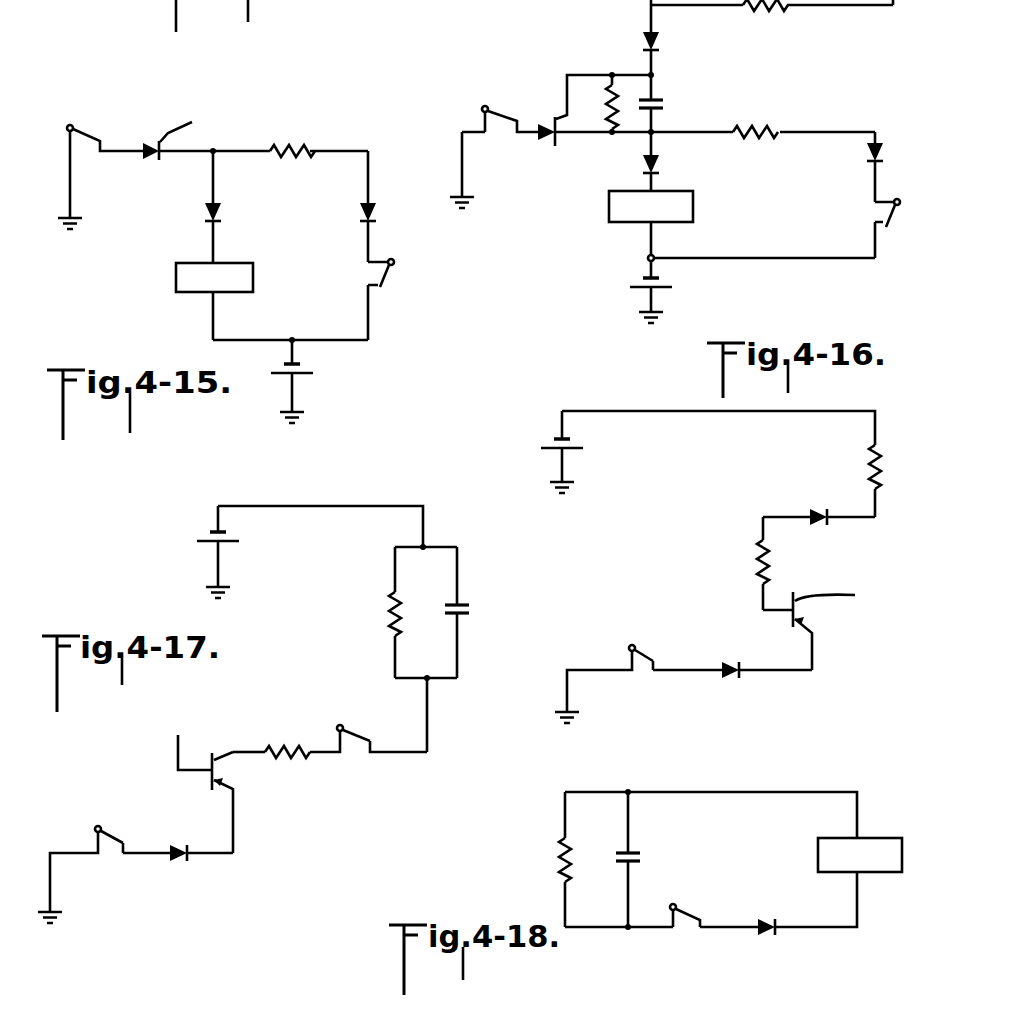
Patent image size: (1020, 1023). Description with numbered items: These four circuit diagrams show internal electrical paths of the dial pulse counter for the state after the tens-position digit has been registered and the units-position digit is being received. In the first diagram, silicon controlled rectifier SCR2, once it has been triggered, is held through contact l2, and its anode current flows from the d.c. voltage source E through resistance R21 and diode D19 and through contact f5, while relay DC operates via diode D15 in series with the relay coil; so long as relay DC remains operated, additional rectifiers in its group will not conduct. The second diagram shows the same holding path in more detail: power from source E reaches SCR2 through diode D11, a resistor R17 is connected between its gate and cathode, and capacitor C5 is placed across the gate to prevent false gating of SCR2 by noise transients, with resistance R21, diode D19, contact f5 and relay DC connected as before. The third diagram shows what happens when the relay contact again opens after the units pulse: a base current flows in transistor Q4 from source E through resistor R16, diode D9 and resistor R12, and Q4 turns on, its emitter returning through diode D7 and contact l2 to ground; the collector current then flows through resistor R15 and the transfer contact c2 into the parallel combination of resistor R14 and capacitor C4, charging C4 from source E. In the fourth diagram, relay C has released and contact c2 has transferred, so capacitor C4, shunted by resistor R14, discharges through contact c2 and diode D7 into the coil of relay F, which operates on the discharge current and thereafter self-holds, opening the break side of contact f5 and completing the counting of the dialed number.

In FIG. 4-15, the contact l2 is at (100, 165).
In FIG. 4-16, the contact l2 is at (494, 145).
In FIG. 4-17, the contact l2 is at (347, 773).
In FIG. 4-15, the silicon controlled rectifier SCR2 is at (157, 155).
In FIG. 4-16, the silicon controlled rectifier SCR2 is at (535, 146).
In FIG. 4-15, the resistance R21 is at (292, 139).
In FIG. 4-16, the resistance R21 is at (756, 120).
In FIG. 4-15, the diode D15 is at (234, 207).
In FIG. 4-16, the diode D15 is at (673, 161).
In FIG. 4-15, the relay DC is at (230, 301).
In FIG. 4-16, the relay DC is at (626, 223).
In FIG. 4-15, the diode D19 is at (387, 206).
In FIG. 4-16, the diode D19 is at (895, 167).
In FIG. 4-15, the contact f5 is at (391, 299).
In FIG. 4-16, the contact f5 is at (898, 228).
In FIG. 4-15, the d.c. voltage source E is at (298, 381).
In FIG. 4-16, the d.c. voltage source E is at (634, 292).
In FIG. 4-17, the d.c. voltage source E is at (397, 504).
In FIG. 4-16, the diode D11 is at (675, 53).
In FIG. 4-16, the resistor R17 is at (603, 103).
In FIG. 4-16, the capacitor C5 is at (666, 103).
In FIG. 4-17, the resistor R14 is at (367, 612).
In FIG. 4-18, the resistor R14 is at (542, 859).
In FIG. 4-17, the capacitor C4 is at (471, 612).
In FIG. 4-18, the capacitor C4 is at (642, 859).
In FIG. 4-17, the resistor R15 is at (271, 740).
In FIG. 4-17, the contact c2 is at (368, 727).
In FIG. 4-18, the contact c2 is at (685, 903).
In FIG. 4-17, the transistor Q4 is at (516, 722).
In FIG. 4-17, the diode D7 is at (467, 748).
In FIG. 4-18, the diode D7 is at (768, 914).
In FIG. 4-17, the resistor R16 is at (895, 481).
In FIG. 4-17, the diode D9 is at (819, 504).
In FIG. 4-17, the resistor R12 is at (741, 563).
In FIG. 4-18, the relay F is at (868, 855).